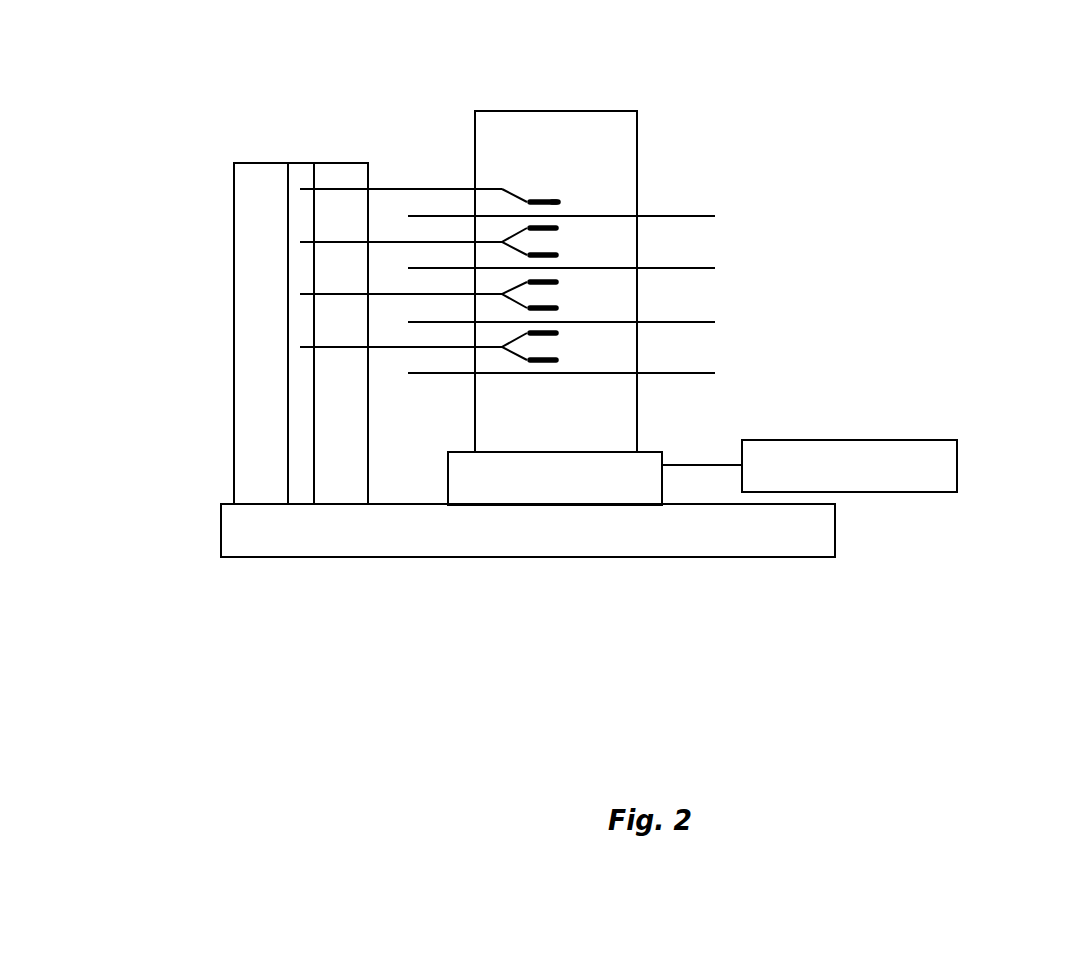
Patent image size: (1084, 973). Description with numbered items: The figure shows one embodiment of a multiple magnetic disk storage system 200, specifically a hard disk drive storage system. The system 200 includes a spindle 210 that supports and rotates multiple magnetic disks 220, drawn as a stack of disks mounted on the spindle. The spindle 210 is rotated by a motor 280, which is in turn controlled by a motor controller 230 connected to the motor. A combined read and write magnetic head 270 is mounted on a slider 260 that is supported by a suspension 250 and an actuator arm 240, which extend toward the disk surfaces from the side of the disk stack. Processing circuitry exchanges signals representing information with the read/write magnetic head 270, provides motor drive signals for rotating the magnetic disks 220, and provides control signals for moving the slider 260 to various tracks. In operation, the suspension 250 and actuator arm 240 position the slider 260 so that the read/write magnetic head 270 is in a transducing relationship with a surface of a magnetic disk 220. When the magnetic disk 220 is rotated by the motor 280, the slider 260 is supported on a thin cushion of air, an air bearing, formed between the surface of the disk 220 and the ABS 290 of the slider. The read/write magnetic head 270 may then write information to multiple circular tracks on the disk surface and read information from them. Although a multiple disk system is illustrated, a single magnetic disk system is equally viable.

The multiple magnetic disk storage system 200 is at (100, 637).
The spindle 210 is at (625, 110).
The magnetic disks 220 is at (675, 216).
The motor controller 230 is at (878, 438).
The actuator arm 240 is at (422, 187).
The suspension 250 is at (515, 189).
The slider 260 is at (548, 200).
The read/write magnetic head 270 is at (556, 363).
The motor 280 is at (650, 451).
The ABS 290 is at (560, 198).